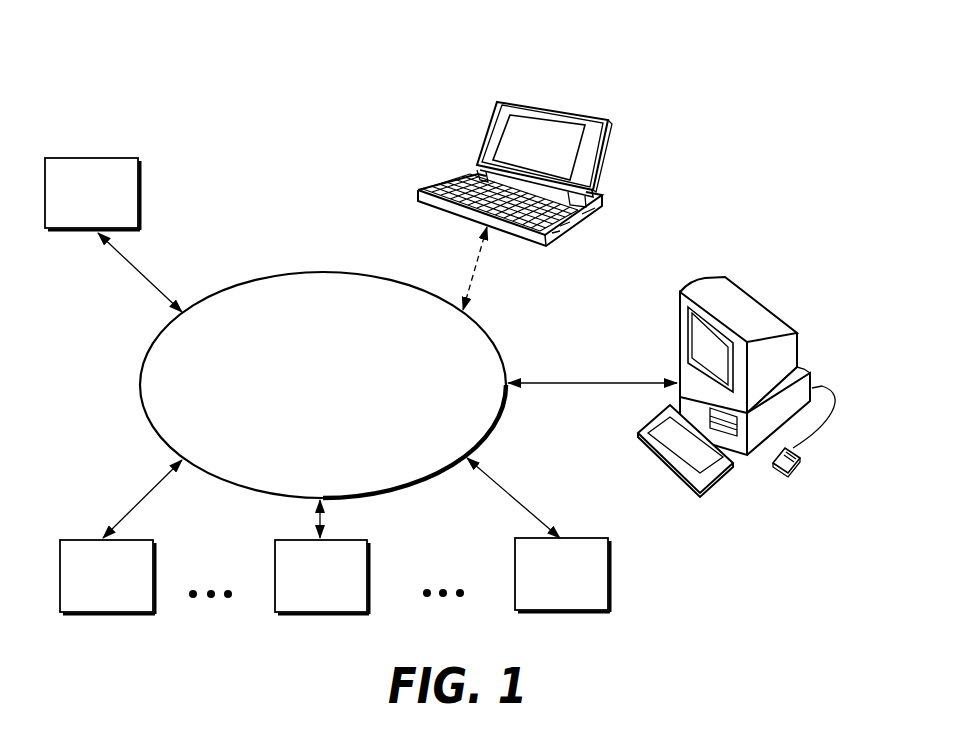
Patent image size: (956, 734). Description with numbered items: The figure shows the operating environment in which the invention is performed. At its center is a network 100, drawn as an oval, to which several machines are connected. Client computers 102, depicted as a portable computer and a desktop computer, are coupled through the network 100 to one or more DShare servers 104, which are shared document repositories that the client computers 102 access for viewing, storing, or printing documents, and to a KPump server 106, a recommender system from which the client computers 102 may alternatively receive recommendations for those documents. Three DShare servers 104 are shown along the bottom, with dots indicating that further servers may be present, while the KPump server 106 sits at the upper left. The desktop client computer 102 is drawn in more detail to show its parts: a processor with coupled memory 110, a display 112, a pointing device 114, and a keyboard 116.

The network 100 is at (490, 336).
The client computer 102 is at (638, 288).
The DShare server 104 is at (154, 552).
The KPump server 106 is at (139, 170).
The processor with coupled memory 110 is at (680, 397).
The display 112 is at (787, 349).
The pointing device 114 is at (800, 455).
The keyboard 116 is at (712, 483).